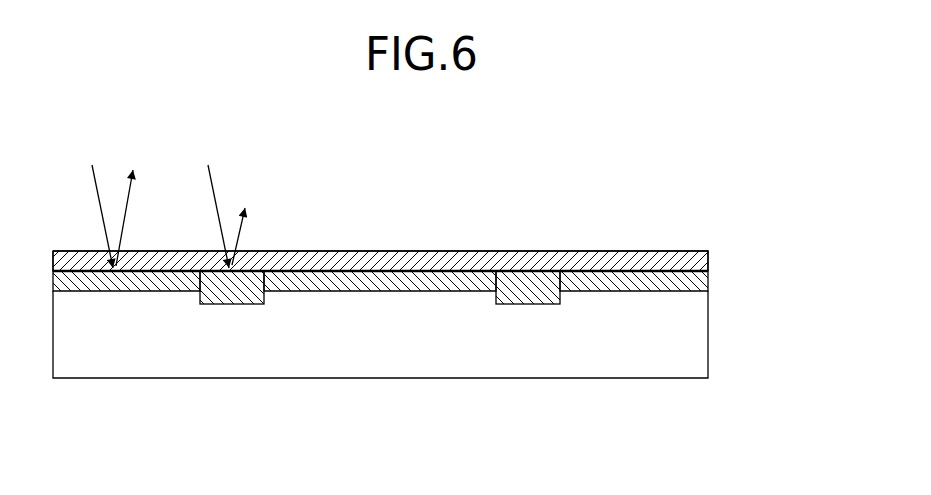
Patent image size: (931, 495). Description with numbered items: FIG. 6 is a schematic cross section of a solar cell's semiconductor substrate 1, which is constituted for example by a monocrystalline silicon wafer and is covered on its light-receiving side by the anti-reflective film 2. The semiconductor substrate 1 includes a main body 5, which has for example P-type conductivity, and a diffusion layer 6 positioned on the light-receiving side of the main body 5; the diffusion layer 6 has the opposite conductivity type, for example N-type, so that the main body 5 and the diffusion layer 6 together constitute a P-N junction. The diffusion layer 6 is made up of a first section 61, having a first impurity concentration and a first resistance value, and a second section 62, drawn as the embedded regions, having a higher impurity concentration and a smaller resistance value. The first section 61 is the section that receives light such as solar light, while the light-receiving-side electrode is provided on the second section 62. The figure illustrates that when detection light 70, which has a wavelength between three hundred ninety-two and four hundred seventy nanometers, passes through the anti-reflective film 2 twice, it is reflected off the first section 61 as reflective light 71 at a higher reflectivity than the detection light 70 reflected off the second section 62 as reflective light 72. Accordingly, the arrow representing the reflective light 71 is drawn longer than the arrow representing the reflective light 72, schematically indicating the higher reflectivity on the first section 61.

The semiconductor substrate 1 is at (440, 287).
The anti-reflective film 2 is at (397, 263).
The main body 5 is at (423, 334).
The diffusion layer 6 is at (424, 250).
The first section 61 is at (70, 275).
The second section 62 is at (250, 278).
The detection light 70 is at (155, 204).
The reflective light 71 is at (134, 203).
The reflective light 72 is at (247, 223).